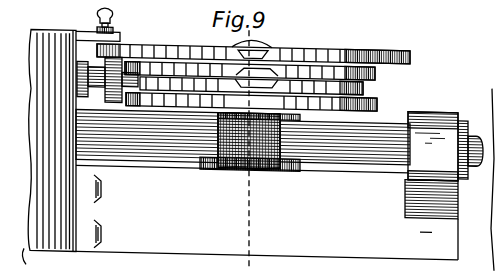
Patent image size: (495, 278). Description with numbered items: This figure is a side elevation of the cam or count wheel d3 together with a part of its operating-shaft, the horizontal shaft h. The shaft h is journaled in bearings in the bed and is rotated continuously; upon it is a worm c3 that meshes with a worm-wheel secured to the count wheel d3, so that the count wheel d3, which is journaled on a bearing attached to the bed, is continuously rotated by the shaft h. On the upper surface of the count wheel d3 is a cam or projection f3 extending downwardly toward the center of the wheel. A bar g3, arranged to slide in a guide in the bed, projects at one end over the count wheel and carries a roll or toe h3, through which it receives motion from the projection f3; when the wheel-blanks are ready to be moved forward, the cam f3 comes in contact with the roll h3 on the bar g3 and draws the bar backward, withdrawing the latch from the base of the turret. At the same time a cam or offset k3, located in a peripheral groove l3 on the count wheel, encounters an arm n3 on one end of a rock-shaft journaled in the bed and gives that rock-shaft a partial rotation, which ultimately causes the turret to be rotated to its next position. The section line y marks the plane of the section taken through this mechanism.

The bar g3 is at (118, 39).
The roll or toe h3 is at (118, 44).
The arm n3 is at (139, 78).
The cam or count wheel d3 is at (253, 43).
The cam or projection f3 is at (268, 46).
The peripheral groove l3 is at (366, 85).
The cam or offset k3 is at (248, 85).
The worm c3 is at (263, 163).
The horizontal shaft h is at (136, 141).
The section line y is at (248, 152).